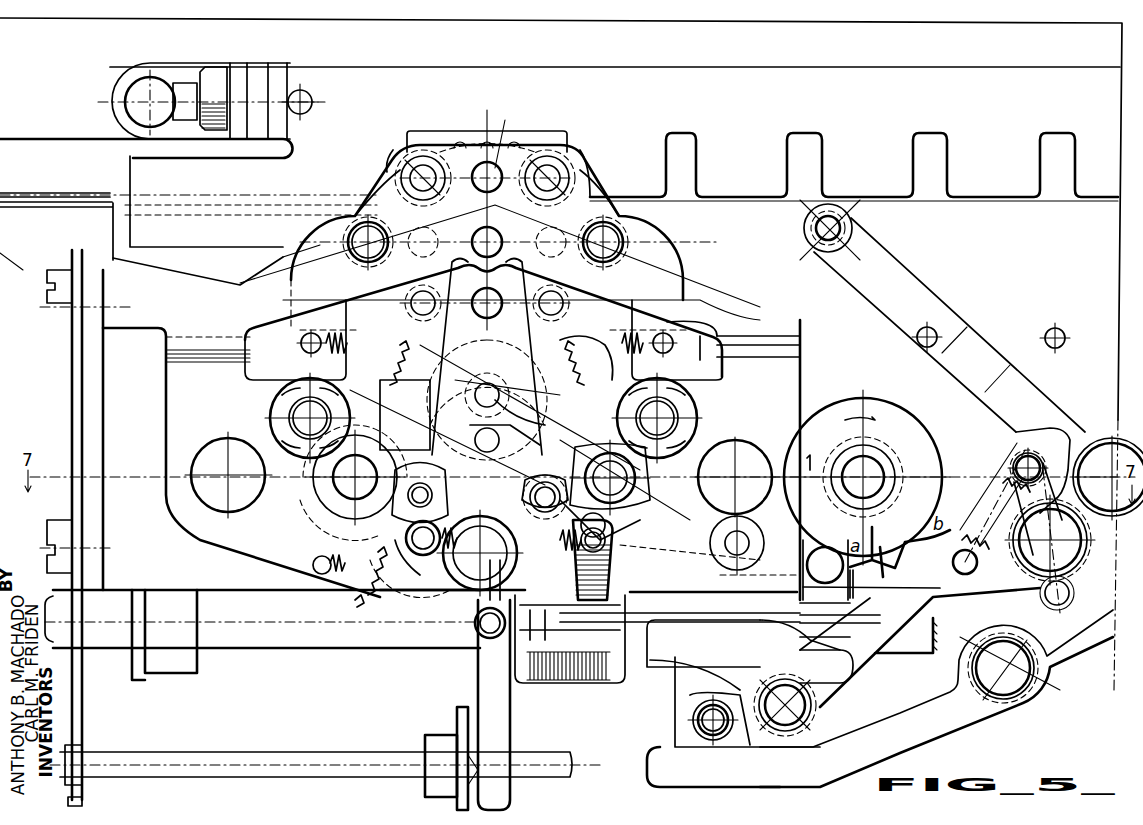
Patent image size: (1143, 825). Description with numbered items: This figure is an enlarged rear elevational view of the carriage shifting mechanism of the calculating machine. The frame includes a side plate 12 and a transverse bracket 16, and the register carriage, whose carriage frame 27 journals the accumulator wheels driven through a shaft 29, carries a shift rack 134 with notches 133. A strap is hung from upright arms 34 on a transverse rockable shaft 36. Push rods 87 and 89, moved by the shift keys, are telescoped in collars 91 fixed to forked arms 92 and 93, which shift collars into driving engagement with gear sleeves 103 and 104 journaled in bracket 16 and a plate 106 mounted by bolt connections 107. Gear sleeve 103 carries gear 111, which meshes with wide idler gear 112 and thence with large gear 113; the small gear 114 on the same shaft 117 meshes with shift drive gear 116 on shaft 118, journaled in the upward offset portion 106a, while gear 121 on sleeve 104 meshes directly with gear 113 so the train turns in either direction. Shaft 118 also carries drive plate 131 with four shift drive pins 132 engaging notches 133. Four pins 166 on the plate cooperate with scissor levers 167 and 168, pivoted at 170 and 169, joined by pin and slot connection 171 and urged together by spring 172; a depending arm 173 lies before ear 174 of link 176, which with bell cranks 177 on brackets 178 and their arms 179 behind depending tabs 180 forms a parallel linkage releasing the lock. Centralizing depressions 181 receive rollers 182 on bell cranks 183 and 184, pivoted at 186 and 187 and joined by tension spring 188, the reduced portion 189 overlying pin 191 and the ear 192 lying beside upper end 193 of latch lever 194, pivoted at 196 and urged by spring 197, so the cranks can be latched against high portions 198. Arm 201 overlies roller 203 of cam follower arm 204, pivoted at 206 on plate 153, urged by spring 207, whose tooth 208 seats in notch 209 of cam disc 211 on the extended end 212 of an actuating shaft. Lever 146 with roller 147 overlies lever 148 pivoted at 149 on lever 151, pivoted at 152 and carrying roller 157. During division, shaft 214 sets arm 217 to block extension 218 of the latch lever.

The side plate 12 is at (72, 365).
The transverse bracket 16 is at (110, 387).
The carriage frame 27 is at (25, 250).
The shaft 29 is at (1060, 328).
The upright arm 34 is at (138, 680).
The transverse rockable shaft 36 is at (222, 645).
The push rod 87 is at (470, 585).
The push rod 89 is at (736, 530).
The collar 91 is at (752, 520).
The forked arm 92 is at (307, 515).
The forked arm 93 is at (628, 560).
The gear sleeve 103 is at (325, 483).
The gear sleeve 104 is at (640, 470).
The plate 106 is at (793, 393).
The upward offset portion 106a is at (730, 297).
The bolt connection 107 is at (205, 455).
The gear 111 is at (305, 469).
The wide idler gear 112 is at (395, 578).
The large gear 113 is at (345, 343).
The small gear 114 is at (496, 382).
The shift drive gear 116 is at (470, 130).
The shaft 117 is at (455, 368).
The shaft 118 is at (478, 238).
The gear 121 is at (660, 490).
The drive plate 131 is at (542, 140).
The shift drive pin 132 is at (560, 160).
The notch 133 is at (910, 152).
The shift rack 134 is at (820, 74).
The lever 146 is at (680, 706).
The roller 147 is at (695, 725).
The lever 148 is at (955, 722).
The pivot 149 is at (1025, 700).
The lever 151 is at (948, 308).
The pivot 152 is at (1103, 440).
The plate 153 is at (1025, 452).
The roller 157 is at (812, 226).
The pin 166 is at (518, 132).
The scissor lever 167 is at (405, 415).
The scissor lever 168 is at (589, 343).
The pivot 169 is at (405, 528).
The pivot 170 is at (628, 522).
The pin and slot connection 171 is at (524, 422).
The spring 172 is at (410, 580).
The depending arm 173 is at (585, 640).
The ear 174 is at (548, 650).
The link 176 is at (630, 640).
The bell crank 177 is at (865, 621).
The bracket 178 is at (820, 548).
The arm 179 is at (790, 548).
The depending tab 180 is at (710, 578).
The centralizing depression 181 is at (588, 196).
The roller 182 is at (618, 232).
The centralizing bell crank 183 is at (295, 262).
The centralizing bell crank 184 is at (660, 244).
The pivot 186 is at (292, 408).
The pivot 187 is at (680, 425).
The tension spring 188 is at (620, 343).
The reduced portion 189 is at (495, 415).
The pin 191 is at (470, 400).
The ear 192 is at (520, 452).
The upper end 193 is at (467, 473).
The latch lever 194 is at (478, 690).
The pivot 196 is at (455, 590).
The spring 197 is at (345, 575).
The high portion 198 is at (590, 150).
The arm 201 is at (705, 665).
The roller 203 is at (810, 712).
The cam follower arm 204 is at (870, 665).
The pivot 206 is at (1040, 590).
The spring 207 is at (1005, 490).
The tooth 208 is at (884, 572).
The notch 209 is at (903, 522).
The cam disc 211 is at (865, 410).
The extended end 212 is at (876, 440).
The shaft 214 is at (208, 760).
The arm 217 is at (455, 718).
The extension 218 is at (478, 745).